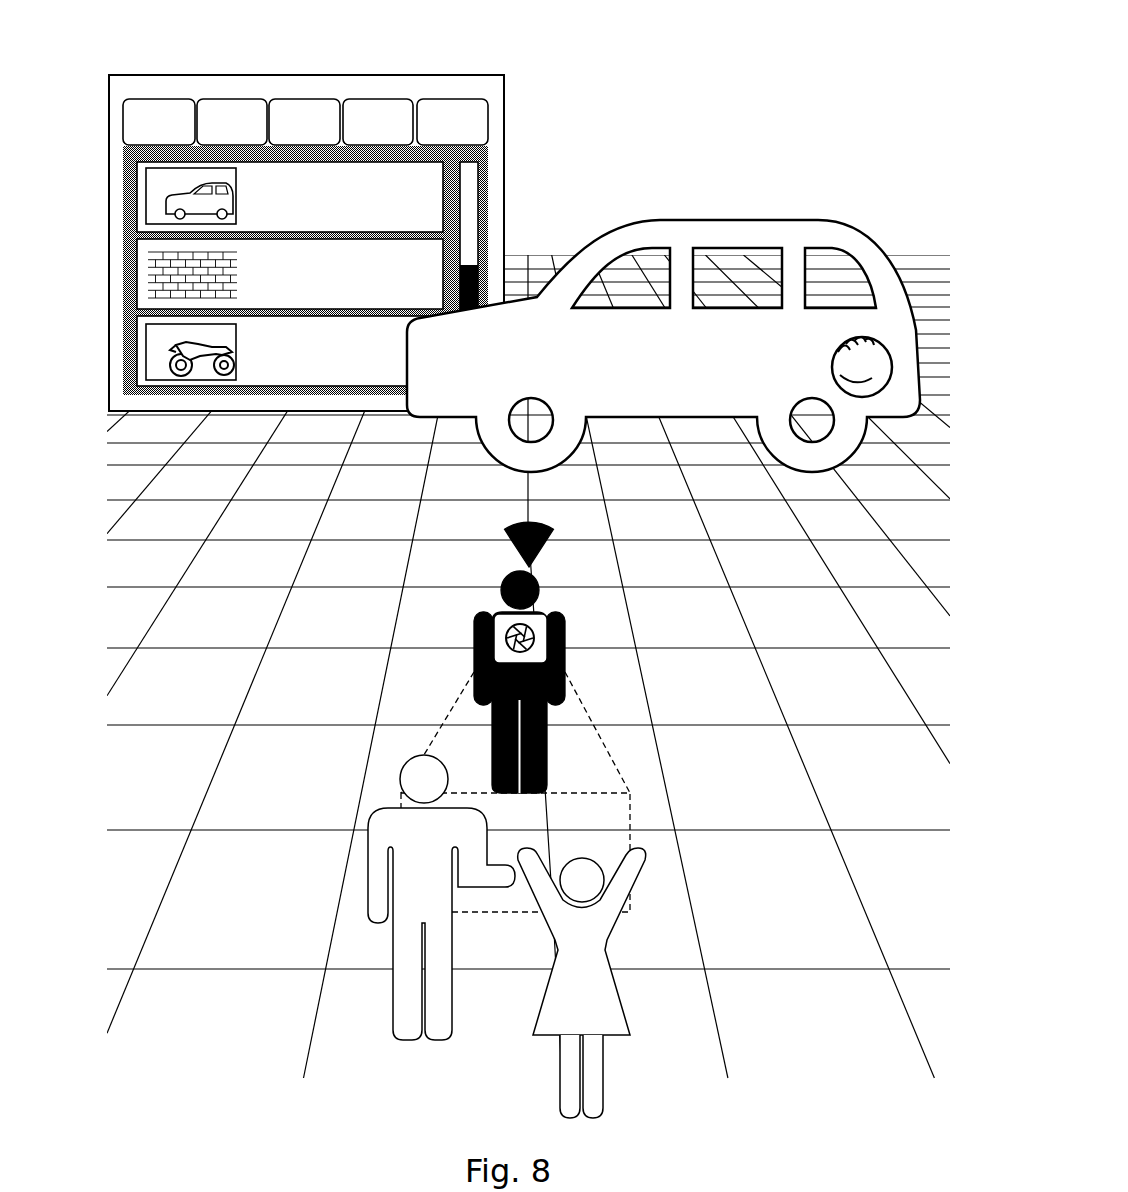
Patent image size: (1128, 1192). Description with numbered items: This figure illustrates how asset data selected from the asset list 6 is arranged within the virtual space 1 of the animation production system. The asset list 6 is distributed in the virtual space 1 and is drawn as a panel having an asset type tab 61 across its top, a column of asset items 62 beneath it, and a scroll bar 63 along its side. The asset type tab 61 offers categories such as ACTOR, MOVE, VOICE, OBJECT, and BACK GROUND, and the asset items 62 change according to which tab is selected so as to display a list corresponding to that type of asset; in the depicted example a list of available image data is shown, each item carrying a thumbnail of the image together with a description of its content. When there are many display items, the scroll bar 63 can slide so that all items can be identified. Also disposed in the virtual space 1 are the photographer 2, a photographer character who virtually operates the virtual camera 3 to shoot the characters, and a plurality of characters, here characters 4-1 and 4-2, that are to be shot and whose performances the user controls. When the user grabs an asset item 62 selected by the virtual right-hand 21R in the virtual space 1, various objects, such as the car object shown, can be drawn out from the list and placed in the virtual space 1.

The asset list 6 is at (315, 207).
The asset type tab 61 is at (489, 117).
The asset item 62 is at (145, 206).
The scroll bar 63 is at (470, 224).
The virtual space 1 is at (680, 312).
The virtual right-hand 21R is at (890, 364).
The photographer 2 is at (530, 657).
The virtual camera 3 is at (544, 626).
The character 4-1 is at (365, 857).
The character 4-2 is at (604, 938).